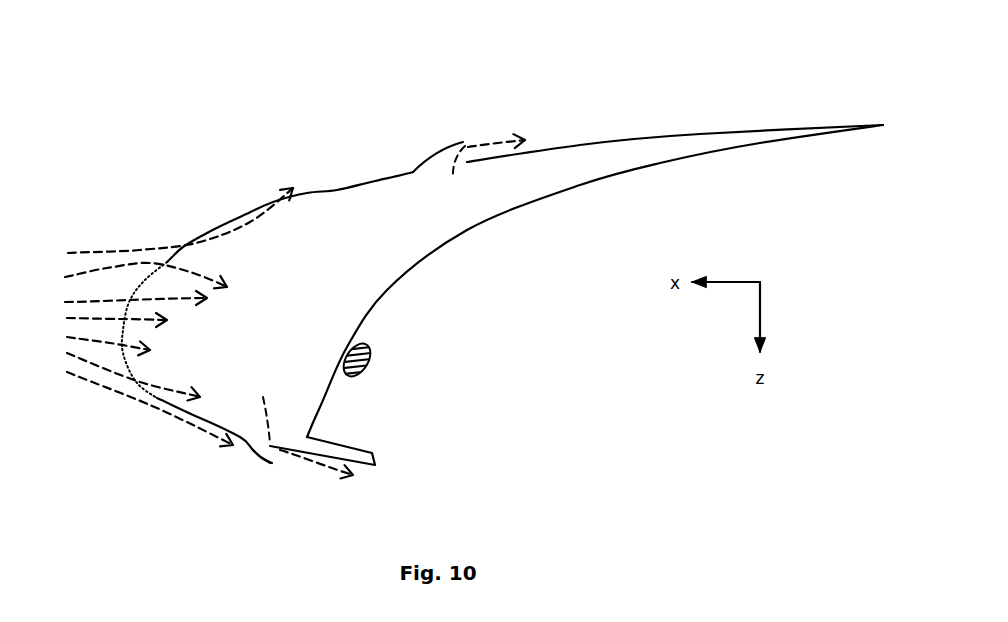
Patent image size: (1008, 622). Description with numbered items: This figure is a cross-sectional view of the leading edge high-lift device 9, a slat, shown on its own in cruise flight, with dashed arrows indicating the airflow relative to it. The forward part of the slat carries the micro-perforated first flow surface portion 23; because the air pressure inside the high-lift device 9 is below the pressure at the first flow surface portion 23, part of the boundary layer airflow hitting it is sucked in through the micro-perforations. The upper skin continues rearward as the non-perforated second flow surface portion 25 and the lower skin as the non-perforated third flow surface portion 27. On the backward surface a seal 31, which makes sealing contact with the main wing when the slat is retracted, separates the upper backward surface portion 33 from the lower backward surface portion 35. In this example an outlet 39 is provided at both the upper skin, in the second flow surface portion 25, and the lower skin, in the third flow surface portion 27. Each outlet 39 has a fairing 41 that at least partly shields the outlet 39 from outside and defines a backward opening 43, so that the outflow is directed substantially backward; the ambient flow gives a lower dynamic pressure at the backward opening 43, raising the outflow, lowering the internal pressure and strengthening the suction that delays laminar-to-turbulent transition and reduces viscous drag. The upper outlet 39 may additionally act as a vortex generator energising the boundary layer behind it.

The leading edge high-lift device 9 is at (678, 83).
The first flow surface portion 23 is at (127, 307).
The second flow surface portion 25 is at (337, 190).
The third flow surface portion 27 is at (190, 420).
The seal 31 is at (370, 365).
The upper backward surface portion 33 is at (467, 233).
The lower backward surface portion 35 is at (320, 407).
The outlet 39 is at (438, 180).
The fairing 41 is at (440, 150).
The backward opening 43 is at (470, 144).